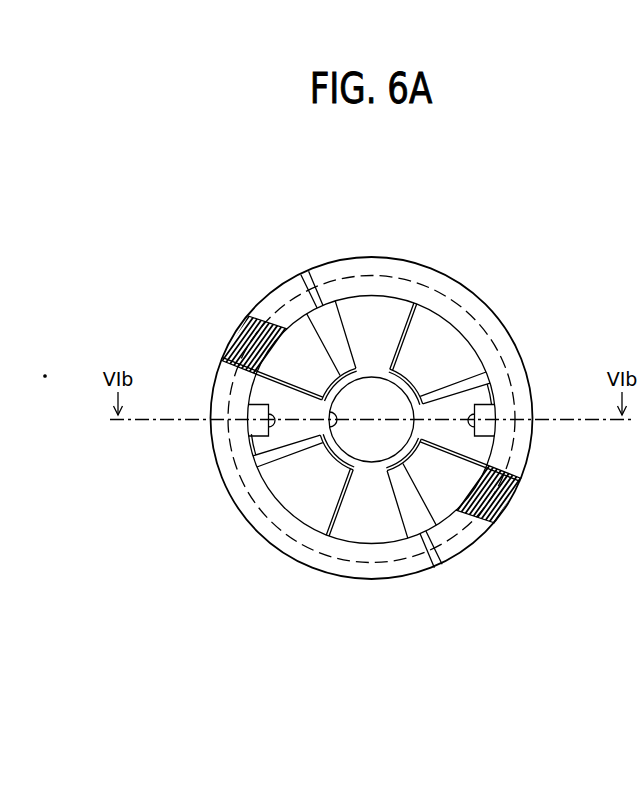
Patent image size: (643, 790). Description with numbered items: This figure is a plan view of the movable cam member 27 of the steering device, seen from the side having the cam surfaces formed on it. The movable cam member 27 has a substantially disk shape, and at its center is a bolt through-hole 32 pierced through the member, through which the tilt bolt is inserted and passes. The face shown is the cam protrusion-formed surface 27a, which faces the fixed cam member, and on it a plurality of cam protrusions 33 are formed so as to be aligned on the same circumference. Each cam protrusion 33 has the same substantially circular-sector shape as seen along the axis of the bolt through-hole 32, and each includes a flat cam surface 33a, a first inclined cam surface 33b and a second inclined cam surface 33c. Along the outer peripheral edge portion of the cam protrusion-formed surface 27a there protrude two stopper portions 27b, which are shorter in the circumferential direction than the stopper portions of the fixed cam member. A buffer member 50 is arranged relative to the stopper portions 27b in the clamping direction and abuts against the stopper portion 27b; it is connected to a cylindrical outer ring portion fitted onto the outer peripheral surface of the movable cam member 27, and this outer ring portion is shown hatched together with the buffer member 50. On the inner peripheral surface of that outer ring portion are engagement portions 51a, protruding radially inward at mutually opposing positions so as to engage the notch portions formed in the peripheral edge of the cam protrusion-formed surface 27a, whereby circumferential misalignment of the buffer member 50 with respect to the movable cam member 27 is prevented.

The movable cam member 27 is at (221, 299).
The cam protrusion-formed surface 27a is at (491, 390).
The stopper portion 27b is at (294, 300).
The bolt through-hole 32 is at (335, 441).
The cam protrusion 33 is at (346, 316).
The flat cam surface 33a is at (283, 320).
The first inclined cam surface 33b is at (405, 310).
The second inclined cam surface 33c is at (326, 332).
The buffer member 50 is at (232, 338).
The engagement portion 51a is at (330, 424).